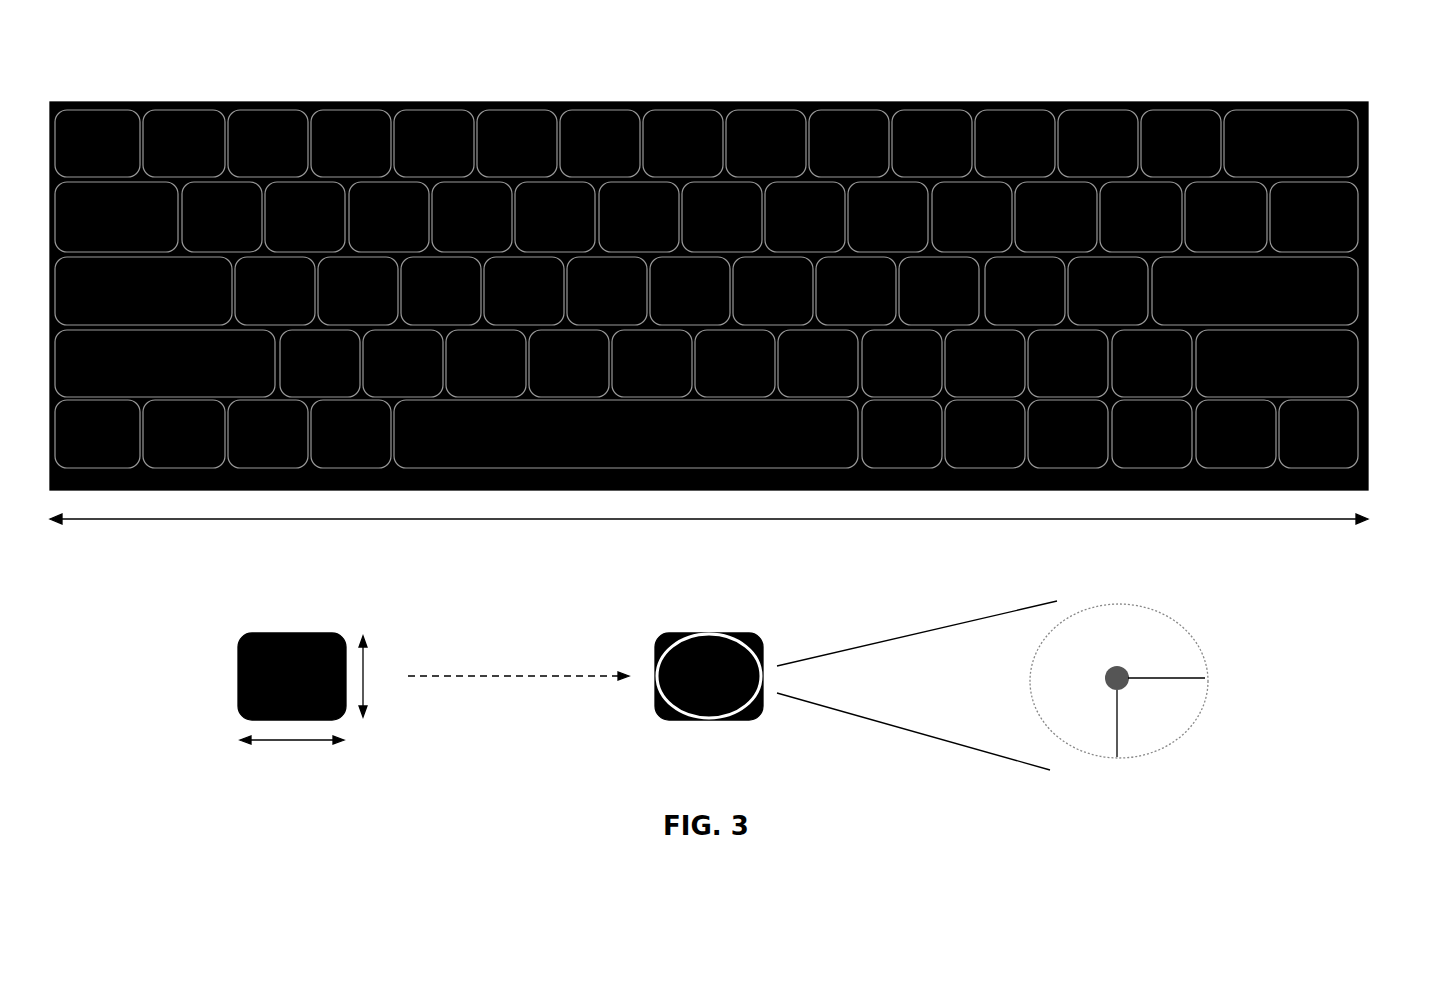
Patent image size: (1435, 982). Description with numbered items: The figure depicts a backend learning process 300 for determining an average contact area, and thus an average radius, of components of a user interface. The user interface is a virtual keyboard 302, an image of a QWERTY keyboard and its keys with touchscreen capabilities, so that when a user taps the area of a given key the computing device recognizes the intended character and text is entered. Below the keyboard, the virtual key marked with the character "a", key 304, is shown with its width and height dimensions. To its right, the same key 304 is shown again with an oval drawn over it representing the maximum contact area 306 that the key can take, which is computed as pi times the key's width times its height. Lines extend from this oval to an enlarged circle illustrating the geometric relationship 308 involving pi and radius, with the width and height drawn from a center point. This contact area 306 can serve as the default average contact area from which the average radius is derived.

The backend learning process 300 is at (1389, 56).
The virtual keyboard 302 is at (54, 82).
The key 304 is at (275, 629).
The maximum contact area 306 is at (655, 642).
The geometric relationship 308 is at (1104, 597).